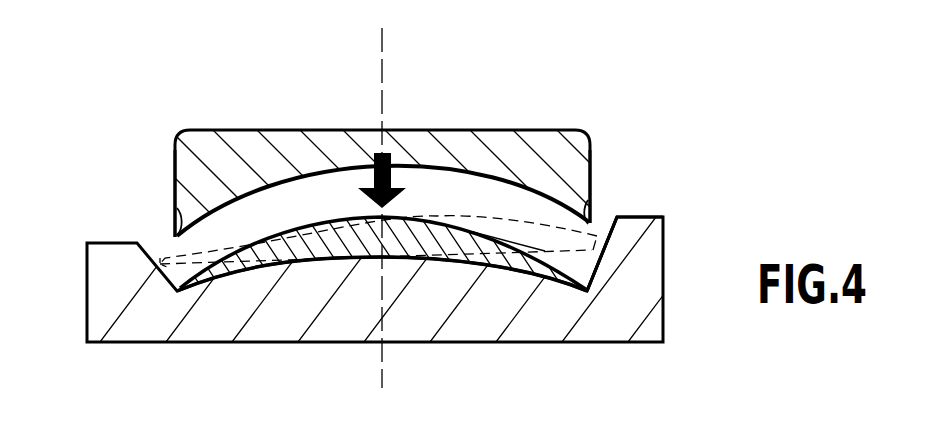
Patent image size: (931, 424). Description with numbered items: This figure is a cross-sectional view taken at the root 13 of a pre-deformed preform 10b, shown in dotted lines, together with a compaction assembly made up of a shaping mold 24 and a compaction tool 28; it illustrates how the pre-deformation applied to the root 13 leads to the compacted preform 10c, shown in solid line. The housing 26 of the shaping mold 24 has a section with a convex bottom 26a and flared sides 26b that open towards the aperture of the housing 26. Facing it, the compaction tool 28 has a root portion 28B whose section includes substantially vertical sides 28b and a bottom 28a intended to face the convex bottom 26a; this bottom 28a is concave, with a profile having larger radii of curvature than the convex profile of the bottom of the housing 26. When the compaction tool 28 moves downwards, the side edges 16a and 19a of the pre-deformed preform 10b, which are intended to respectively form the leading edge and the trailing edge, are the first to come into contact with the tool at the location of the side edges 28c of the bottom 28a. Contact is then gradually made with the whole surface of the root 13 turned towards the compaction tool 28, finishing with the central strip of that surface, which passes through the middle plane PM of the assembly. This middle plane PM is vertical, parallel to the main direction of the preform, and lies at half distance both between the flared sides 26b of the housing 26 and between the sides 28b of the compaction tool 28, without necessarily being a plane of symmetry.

The middle plane PM is at (384, 70).
The compaction tool 28 is at (392, 152).
The root portion 28B is at (213, 147).
The bottom 28a is at (473, 180).
The sides 28b is at (172, 166).
The side edges 28c is at (179, 213).
The housing 26 is at (523, 216).
The shaping mold 24 is at (414, 283).
The convex bottom 26a is at (468, 253).
The flared sides 26b is at (611, 224).
The side edge 16a is at (612, 250).
The root 13 is at (370, 241).
The compacted preform 10c is at (325, 214).
The pre-deformed preform 10b is at (323, 299).
The side edge 19a is at (163, 266).